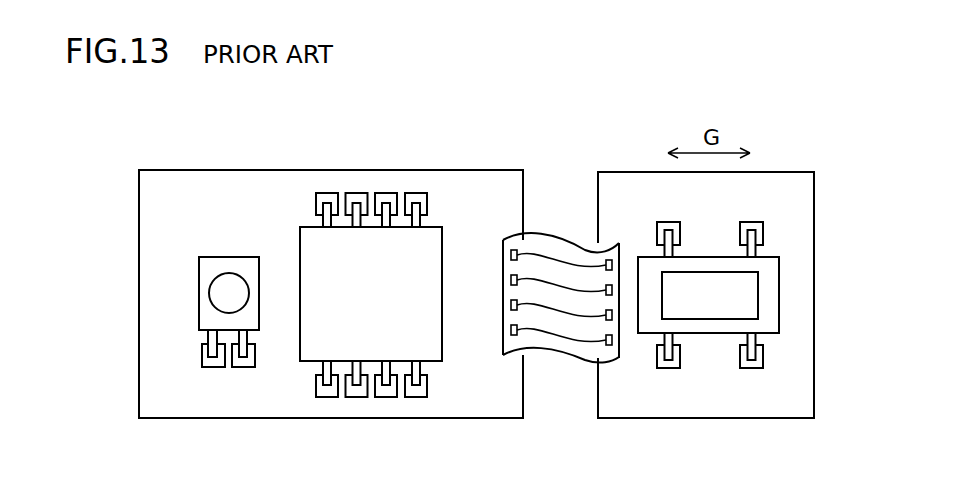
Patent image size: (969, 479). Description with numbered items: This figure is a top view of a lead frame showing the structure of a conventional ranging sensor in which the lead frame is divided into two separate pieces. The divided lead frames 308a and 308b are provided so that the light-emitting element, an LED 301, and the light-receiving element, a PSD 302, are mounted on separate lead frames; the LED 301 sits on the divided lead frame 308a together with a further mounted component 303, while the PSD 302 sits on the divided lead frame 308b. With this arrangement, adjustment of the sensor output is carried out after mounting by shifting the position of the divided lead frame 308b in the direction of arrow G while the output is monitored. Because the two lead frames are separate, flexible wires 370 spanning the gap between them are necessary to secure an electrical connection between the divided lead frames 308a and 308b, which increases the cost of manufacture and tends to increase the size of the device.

The LED 301 is at (225, 294).
The PSD 302 is at (728, 295).
The integrated circuit component 303 is at (322, 255).
The divided lead frame 308a is at (168, 216).
The divided lead frame 308b is at (626, 195).
The flexible wires 370 is at (563, 240).